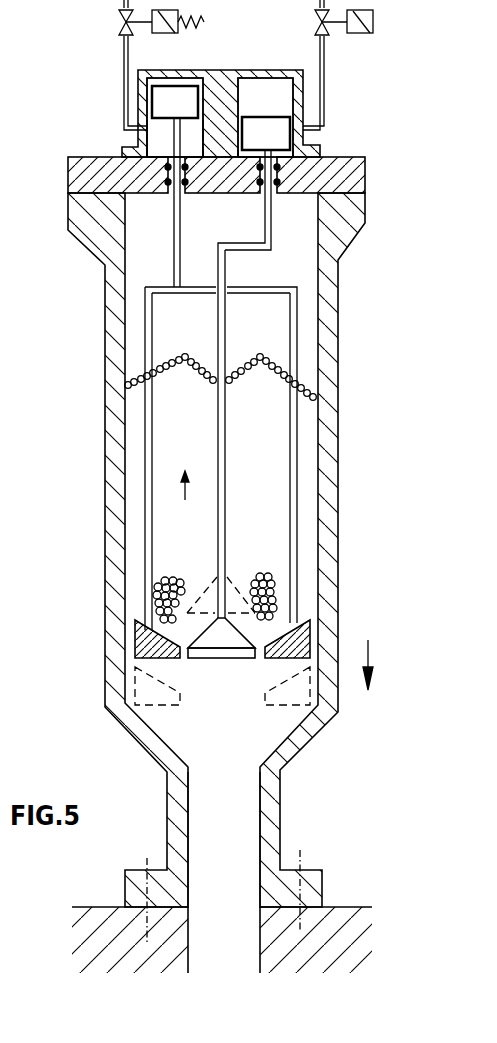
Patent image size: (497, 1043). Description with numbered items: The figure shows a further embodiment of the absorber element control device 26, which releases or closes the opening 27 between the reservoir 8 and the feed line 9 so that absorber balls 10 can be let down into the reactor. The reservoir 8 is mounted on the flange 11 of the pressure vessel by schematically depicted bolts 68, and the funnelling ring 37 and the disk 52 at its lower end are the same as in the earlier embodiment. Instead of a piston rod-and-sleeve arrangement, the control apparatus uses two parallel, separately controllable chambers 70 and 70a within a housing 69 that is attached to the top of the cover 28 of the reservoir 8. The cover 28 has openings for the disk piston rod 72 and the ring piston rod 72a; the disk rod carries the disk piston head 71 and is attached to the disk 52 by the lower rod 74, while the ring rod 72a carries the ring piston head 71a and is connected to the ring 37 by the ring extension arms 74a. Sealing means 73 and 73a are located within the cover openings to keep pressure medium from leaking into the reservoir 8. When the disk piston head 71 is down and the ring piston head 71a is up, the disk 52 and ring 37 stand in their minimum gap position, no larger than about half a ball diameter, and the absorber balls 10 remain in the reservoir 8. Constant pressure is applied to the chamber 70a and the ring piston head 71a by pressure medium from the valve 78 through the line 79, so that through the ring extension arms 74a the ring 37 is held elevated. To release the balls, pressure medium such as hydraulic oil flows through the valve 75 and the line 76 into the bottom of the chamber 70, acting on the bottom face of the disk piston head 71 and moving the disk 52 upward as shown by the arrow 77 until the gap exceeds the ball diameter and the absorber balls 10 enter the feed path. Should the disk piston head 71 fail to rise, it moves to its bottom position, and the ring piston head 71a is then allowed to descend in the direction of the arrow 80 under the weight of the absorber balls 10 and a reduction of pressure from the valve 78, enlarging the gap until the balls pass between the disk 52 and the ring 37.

The reservoir 8 is at (115, 363).
The feed line 9 is at (226, 948).
The absorber balls 10 is at (262, 575).
The flange 11 is at (345, 925).
The absorber element control device 26 is at (352, 284).
The opening 27 is at (232, 764).
The cover 28 is at (85, 174).
The funnelling ring 37 is at (135, 646).
The disk 52 is at (224, 656).
The bolts 68 is at (300, 858).
The housing 69 is at (226, 88).
The chamber 70 is at (266, 88).
The chamber 70a is at (160, 137).
The disk piston head 71 is at (270, 128).
The ring piston head 71a is at (148, 90).
The disk piston rod 72 is at (272, 215).
The ring piston rod 72a is at (183, 215).
The sealing means 73 is at (283, 175).
The sealing means 73a is at (168, 186).
The rod 74 is at (226, 268).
The ring extension arms 74a is at (155, 328).
The valve 75 is at (373, 22).
The line 76 is at (296, 137).
The arrow 77 is at (185, 500).
The valve 78 is at (119, 20).
The piston 79 is at (160, 96).
The arrow 80 is at (368, 655).